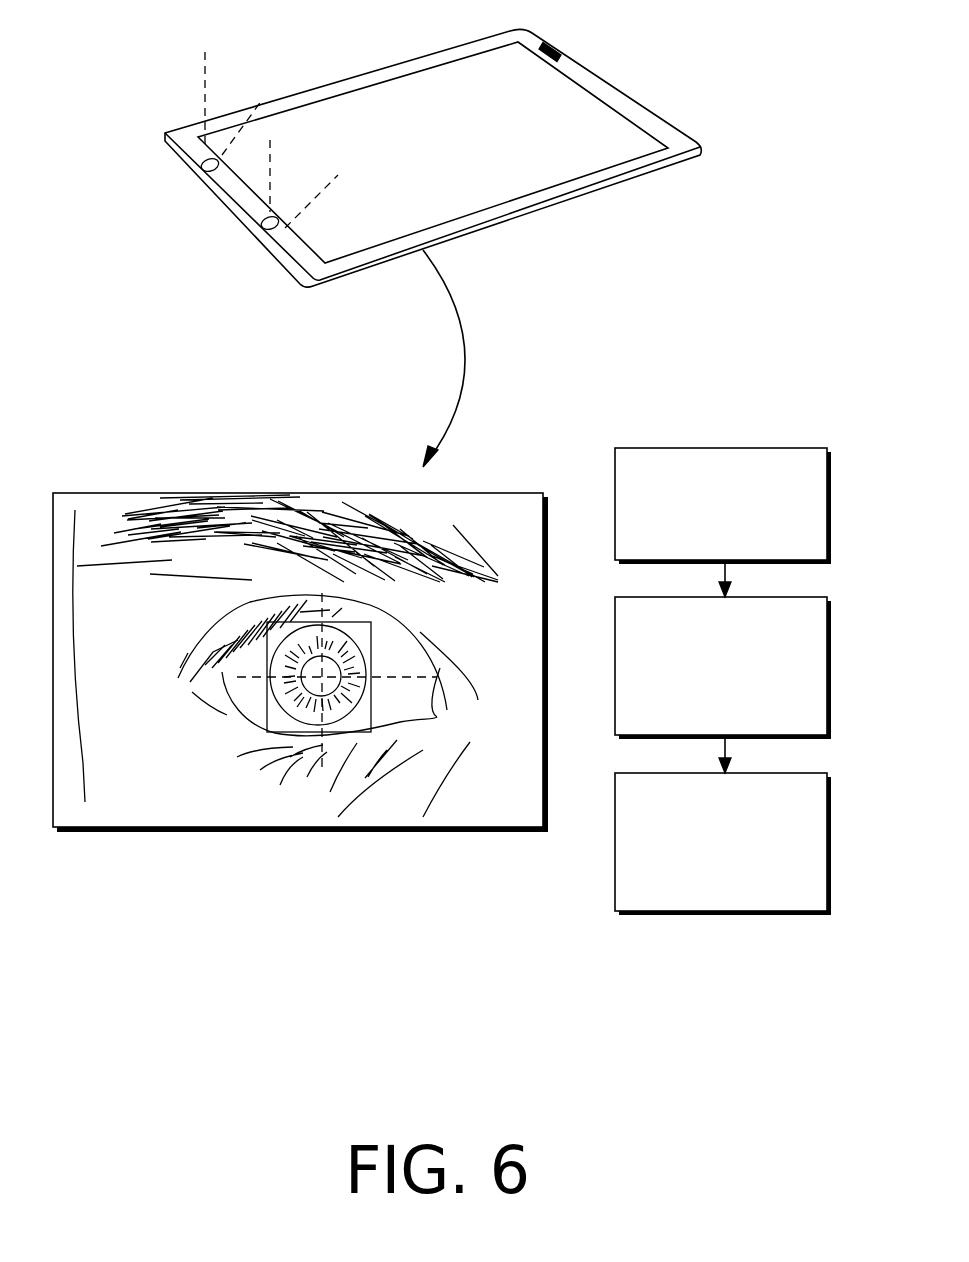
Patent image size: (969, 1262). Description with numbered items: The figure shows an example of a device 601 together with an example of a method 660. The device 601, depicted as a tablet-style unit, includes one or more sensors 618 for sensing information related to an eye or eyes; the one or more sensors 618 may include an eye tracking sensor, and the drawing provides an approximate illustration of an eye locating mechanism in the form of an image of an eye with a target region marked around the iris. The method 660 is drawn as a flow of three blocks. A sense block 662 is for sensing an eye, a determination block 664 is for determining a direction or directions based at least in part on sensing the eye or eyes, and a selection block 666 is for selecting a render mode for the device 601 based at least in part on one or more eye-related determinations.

The device 601 is at (272, 23).
The sensors 618 is at (263, 223).
The method 660 is at (723, 654).
The sense block 662 is at (723, 506).
The determination block 664 is at (723, 668).
The selection block 666 is at (723, 844).